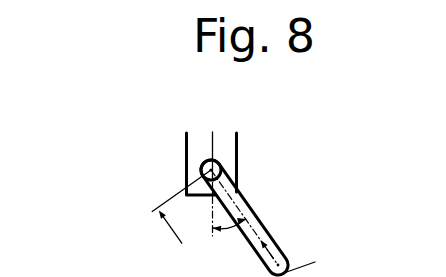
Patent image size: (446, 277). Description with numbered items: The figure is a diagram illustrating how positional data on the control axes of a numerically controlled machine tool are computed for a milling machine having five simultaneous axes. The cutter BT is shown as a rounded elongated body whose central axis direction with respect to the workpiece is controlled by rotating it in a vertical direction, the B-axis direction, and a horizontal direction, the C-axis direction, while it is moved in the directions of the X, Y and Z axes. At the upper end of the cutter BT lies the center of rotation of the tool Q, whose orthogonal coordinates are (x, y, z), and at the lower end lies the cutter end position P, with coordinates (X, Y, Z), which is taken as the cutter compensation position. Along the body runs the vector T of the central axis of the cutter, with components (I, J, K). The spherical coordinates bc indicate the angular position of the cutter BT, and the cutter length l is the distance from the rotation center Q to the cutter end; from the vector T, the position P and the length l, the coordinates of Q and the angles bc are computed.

The center of rotation of the tool Q is at (211, 170).
The cutter BT is at (250, 190).
The vector of the central axis of the cutter T is at (273, 258).
The cutter end position P is at (289, 265).
The spherical coordinates indicative of the angular position of the cutter bc is at (229, 238).
The cutter length l is at (181, 221).